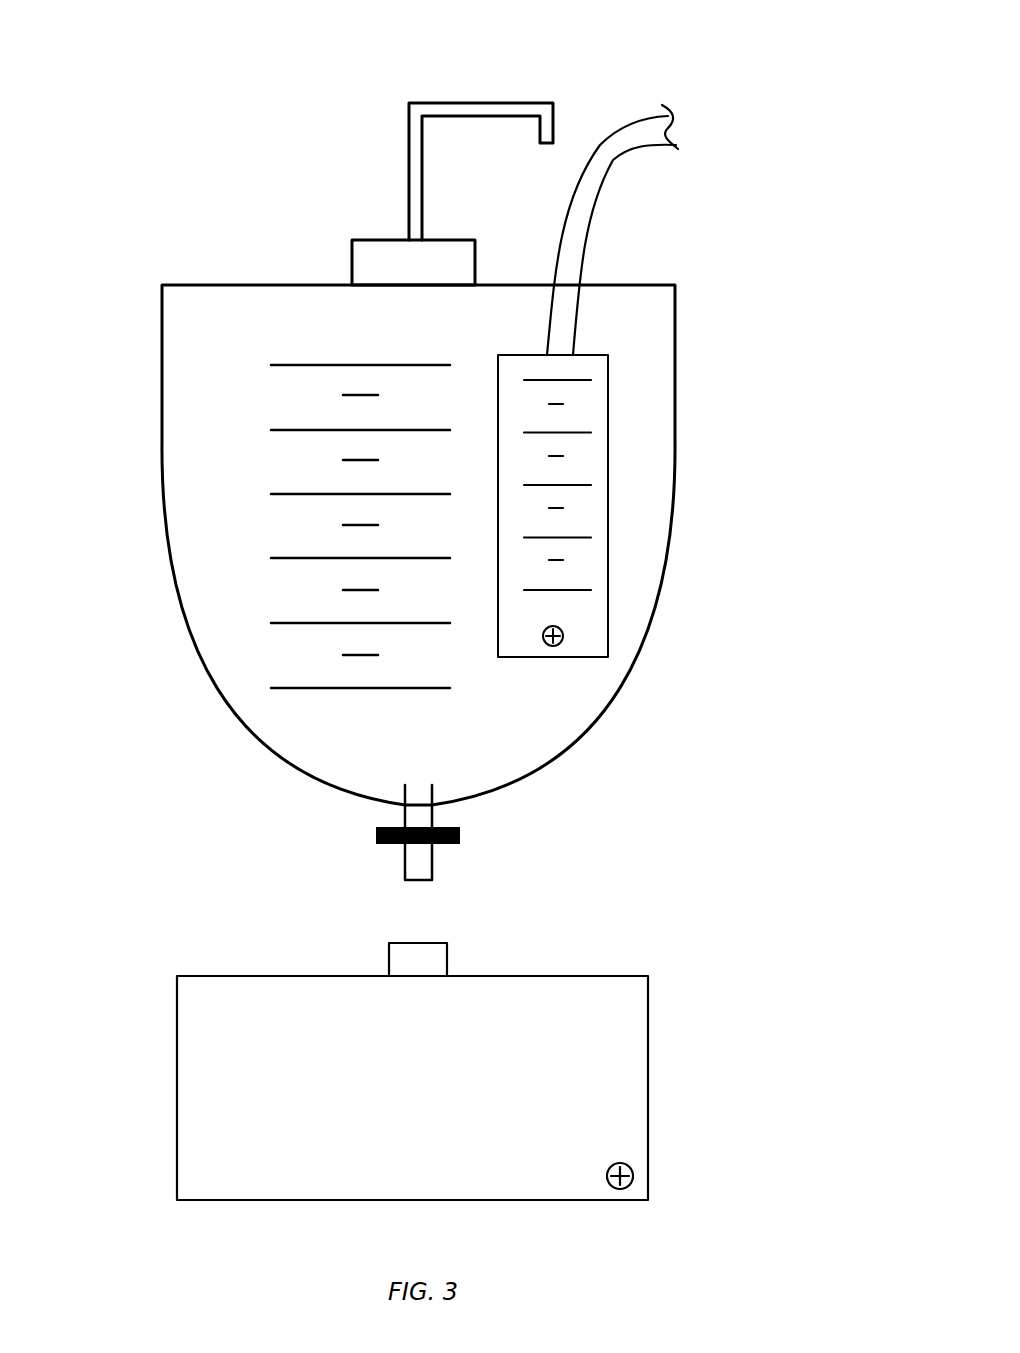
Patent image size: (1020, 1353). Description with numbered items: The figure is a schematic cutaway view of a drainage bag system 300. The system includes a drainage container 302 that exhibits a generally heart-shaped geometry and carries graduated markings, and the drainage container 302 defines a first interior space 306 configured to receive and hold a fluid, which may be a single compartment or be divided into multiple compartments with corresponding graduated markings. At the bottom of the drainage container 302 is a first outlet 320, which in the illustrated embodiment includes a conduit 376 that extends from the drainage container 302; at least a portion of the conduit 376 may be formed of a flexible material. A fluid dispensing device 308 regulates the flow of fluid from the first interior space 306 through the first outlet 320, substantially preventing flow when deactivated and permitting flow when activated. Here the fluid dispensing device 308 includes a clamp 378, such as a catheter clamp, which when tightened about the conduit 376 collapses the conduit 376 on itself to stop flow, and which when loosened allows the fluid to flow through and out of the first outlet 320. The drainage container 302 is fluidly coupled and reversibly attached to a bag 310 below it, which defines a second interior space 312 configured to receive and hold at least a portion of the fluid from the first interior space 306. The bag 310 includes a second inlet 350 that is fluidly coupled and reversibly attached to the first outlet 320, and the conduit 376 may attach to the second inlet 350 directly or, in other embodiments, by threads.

The drainage bag system 300 is at (707, 64).
The drainage container 302 is at (684, 418).
The first interior space 306 is at (218, 477).
The first outlet 320 is at (436, 818).
The conduit 376 is at (404, 820).
The clamp 378 is at (460, 836).
The fluid dispensing device 308 is at (374, 831).
The second inlet 350 is at (386, 957).
The bag 310 is at (654, 1032).
The second interior space 312 is at (562, 1026).